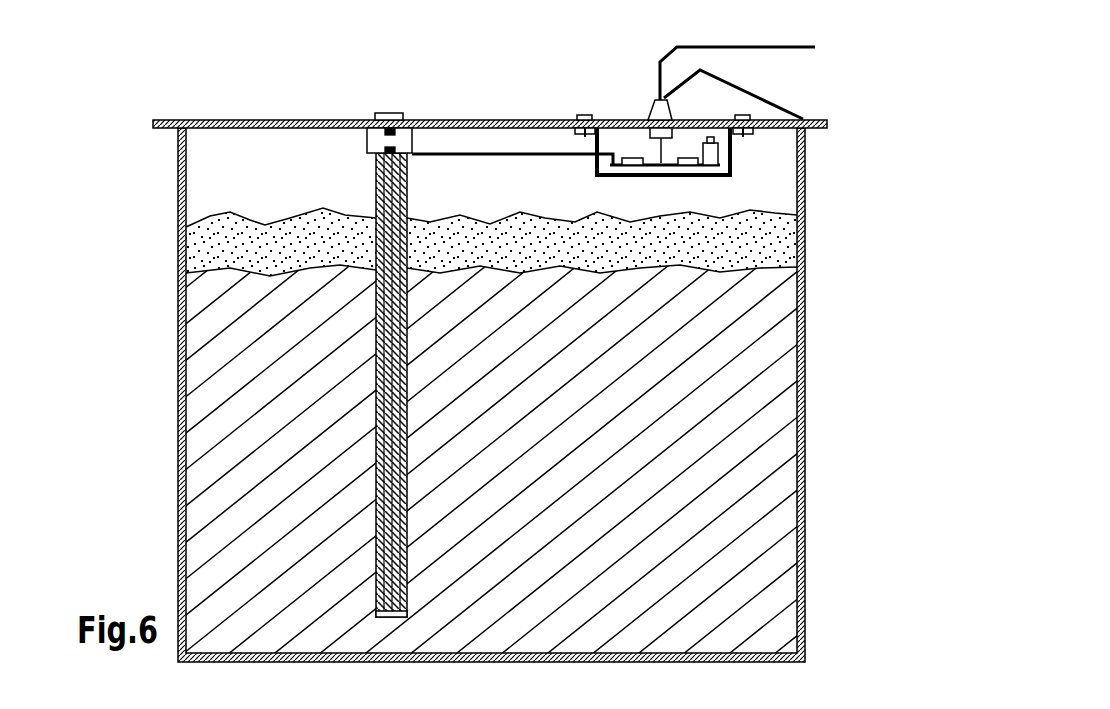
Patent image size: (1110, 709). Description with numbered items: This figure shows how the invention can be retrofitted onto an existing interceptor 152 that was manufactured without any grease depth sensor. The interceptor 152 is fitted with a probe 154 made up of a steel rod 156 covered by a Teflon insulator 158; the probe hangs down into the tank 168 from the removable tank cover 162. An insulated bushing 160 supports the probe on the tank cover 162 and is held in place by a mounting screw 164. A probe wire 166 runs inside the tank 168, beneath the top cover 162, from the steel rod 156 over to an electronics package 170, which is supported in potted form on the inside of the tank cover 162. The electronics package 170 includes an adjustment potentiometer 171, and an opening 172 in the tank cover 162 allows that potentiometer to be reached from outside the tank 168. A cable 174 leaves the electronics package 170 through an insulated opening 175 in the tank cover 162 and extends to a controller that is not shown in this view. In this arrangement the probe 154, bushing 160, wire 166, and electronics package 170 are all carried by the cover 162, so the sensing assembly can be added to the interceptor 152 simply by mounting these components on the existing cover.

The interceptor 152 is at (452, 354).
The probe 154 is at (375, 337).
The steel rod 156 is at (377, 552).
The Teflon insulator 158 is at (362, 445).
The insulated bushing 160 is at (365, 140).
The tank cover 162 is at (320, 120).
The mounting screw 164 is at (393, 112).
The probe wire 166 is at (507, 157).
The tank 168 is at (178, 417).
The electronics package 170 is at (676, 172).
The adjustment potentiometer 171 is at (718, 158).
The opening 172 is at (712, 118).
The cable 174 is at (700, 46).
The insulated opening 175 is at (647, 118).